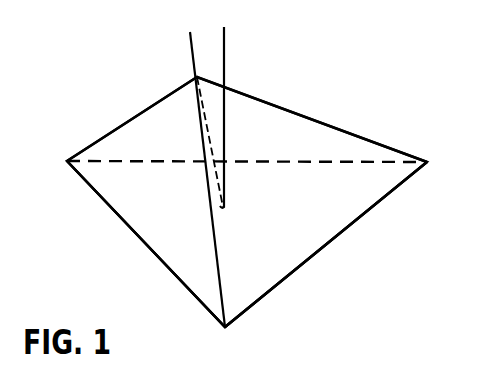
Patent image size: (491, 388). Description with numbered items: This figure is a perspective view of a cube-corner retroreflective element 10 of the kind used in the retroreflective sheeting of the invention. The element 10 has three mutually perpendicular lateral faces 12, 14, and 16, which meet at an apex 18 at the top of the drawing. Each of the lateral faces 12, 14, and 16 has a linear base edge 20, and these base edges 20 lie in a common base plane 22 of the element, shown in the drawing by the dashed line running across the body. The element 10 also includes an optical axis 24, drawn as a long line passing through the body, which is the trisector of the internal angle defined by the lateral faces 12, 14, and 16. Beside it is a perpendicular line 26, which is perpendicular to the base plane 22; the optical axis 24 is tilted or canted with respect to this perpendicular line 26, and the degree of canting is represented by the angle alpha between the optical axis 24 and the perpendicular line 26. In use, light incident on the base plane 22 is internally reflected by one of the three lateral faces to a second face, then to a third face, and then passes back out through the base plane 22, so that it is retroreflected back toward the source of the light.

The cube-corner retroreflective element 10 is at (111, 229).
The lateral face 12 is at (182, 239).
The lateral face 14 is at (293, 240).
The lateral face 16 is at (293, 130).
The apex 18 is at (197, 77).
The base edges 20 is at (177, 276).
The base plane 22 is at (310, 210).
The optical axis 24 is at (193, 50).
The perpendicular line 26 is at (225, 65).